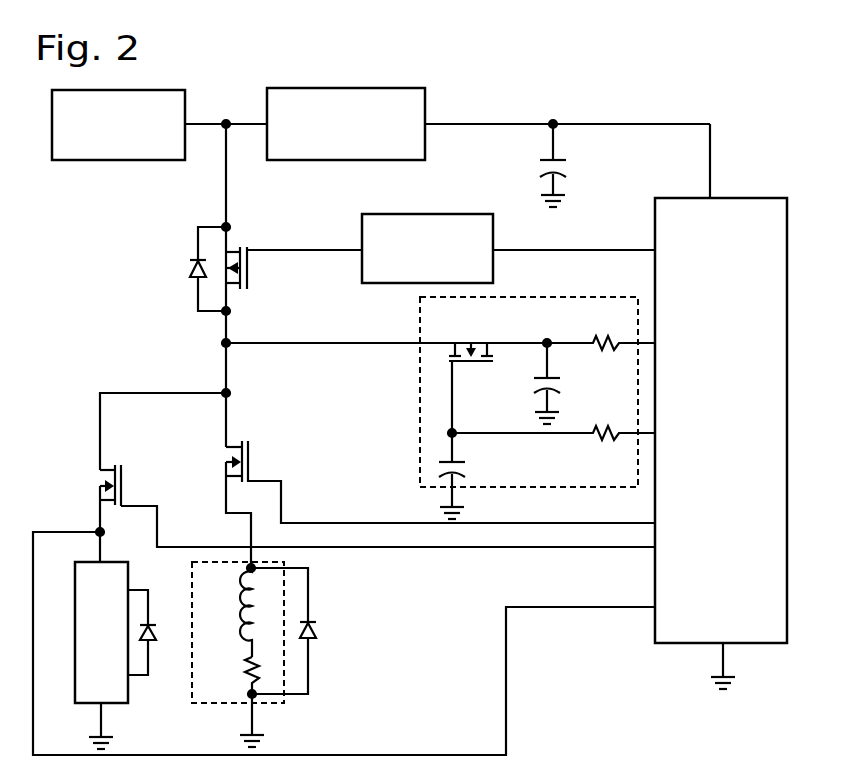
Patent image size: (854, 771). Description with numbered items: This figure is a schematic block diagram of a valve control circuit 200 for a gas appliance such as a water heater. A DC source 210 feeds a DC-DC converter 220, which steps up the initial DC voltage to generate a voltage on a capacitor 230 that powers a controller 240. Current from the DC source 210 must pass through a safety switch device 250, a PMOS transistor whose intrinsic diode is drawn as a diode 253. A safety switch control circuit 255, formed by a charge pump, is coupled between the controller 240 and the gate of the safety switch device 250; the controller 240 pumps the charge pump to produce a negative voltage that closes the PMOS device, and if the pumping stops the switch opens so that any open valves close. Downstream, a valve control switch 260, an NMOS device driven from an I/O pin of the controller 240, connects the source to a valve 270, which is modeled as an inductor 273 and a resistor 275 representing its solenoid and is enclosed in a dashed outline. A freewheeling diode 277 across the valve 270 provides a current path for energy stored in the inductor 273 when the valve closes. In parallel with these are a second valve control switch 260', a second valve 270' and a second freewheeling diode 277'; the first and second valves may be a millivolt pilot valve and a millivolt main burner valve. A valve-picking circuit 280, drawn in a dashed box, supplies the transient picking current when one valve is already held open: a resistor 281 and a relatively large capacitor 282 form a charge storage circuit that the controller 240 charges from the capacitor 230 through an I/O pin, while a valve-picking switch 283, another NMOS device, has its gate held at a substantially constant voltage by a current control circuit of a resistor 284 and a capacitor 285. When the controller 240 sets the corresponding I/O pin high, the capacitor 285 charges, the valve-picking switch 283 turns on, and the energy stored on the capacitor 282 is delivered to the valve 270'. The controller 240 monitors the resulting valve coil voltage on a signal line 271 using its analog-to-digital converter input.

The valve control circuit 200 is at (659, 83).
The DC source 210 is at (134, 90).
The DC-DC converter 220 is at (371, 88).
The capacitor 230 is at (560, 160).
The controller 240 is at (732, 198).
The safety switch device 250 is at (249, 268).
The diode 253 is at (190, 276).
The safety switch control circuit 255 is at (436, 214).
The valve control switch 260 is at (440, 479).
The second valve control switch 260' is at (377, 503).
The valve 270 is at (214, 654).
The second valve 270' is at (84, 655).
The signal line 271 is at (550, 607).
The inductor 273 is at (233, 610).
The resistor 275 is at (246, 664).
The diode 277 is at (318, 631).
The second freewheeling diode 277' is at (159, 620).
The valve-picking circuit 280 is at (401, 386).
The resistor 281 is at (608, 340).
The capacitor 282 is at (554, 378).
The valve-picking switch 283 is at (470, 364).
The resistor 284 is at (607, 440).
The capacitor 285 is at (462, 462).